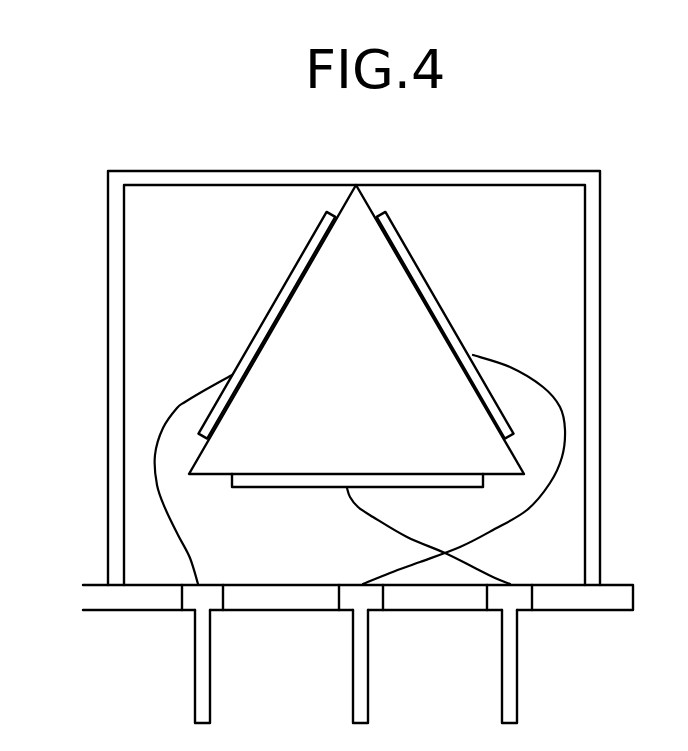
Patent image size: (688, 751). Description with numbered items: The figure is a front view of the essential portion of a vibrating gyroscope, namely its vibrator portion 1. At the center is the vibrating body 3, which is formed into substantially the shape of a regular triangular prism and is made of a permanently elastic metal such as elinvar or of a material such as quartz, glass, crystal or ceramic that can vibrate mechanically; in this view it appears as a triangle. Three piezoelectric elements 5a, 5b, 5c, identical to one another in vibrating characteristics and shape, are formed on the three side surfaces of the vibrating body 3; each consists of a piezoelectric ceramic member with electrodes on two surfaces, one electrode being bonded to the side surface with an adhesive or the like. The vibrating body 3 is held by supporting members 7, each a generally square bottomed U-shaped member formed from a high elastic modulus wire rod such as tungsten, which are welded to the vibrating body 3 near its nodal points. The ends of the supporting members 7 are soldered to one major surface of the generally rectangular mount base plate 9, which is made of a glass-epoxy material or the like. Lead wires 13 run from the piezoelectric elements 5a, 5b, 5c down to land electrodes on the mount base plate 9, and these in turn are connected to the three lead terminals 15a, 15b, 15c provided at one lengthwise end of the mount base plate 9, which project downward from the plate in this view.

The vibrator portion 1 is at (236, 137).
The vibrating body 3 is at (217, 460).
The piezoelectric element 5a is at (252, 335).
The piezoelectric element 5b is at (437, 293).
The piezoelectric element 5c is at (473, 487).
The supporting member 7 is at (600, 283).
The mount base plate 9 is at (98, 584).
The lead wires 13 is at (177, 408).
The lead terminal 15a is at (196, 668).
The lead terminal 15b is at (353, 668).
The lead terminal 15c is at (502, 668).